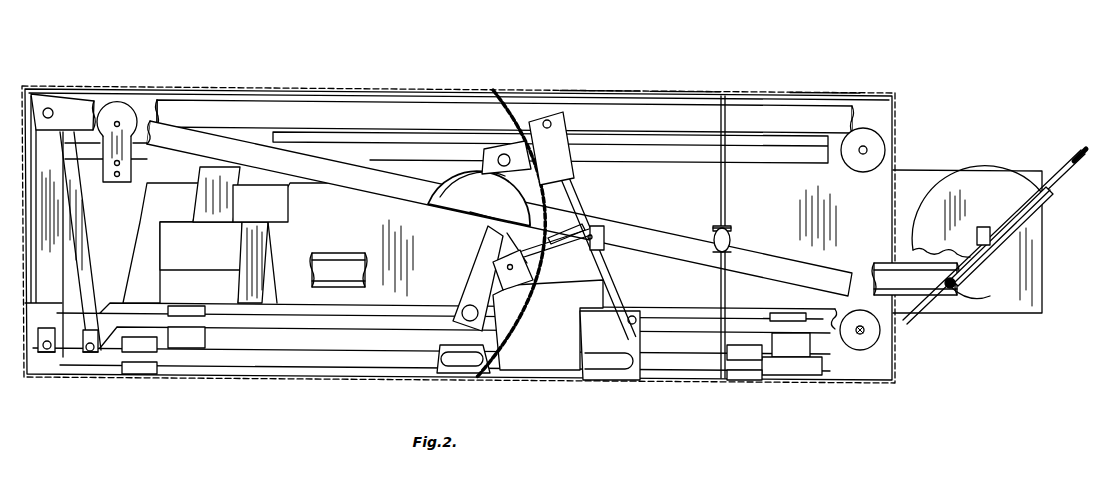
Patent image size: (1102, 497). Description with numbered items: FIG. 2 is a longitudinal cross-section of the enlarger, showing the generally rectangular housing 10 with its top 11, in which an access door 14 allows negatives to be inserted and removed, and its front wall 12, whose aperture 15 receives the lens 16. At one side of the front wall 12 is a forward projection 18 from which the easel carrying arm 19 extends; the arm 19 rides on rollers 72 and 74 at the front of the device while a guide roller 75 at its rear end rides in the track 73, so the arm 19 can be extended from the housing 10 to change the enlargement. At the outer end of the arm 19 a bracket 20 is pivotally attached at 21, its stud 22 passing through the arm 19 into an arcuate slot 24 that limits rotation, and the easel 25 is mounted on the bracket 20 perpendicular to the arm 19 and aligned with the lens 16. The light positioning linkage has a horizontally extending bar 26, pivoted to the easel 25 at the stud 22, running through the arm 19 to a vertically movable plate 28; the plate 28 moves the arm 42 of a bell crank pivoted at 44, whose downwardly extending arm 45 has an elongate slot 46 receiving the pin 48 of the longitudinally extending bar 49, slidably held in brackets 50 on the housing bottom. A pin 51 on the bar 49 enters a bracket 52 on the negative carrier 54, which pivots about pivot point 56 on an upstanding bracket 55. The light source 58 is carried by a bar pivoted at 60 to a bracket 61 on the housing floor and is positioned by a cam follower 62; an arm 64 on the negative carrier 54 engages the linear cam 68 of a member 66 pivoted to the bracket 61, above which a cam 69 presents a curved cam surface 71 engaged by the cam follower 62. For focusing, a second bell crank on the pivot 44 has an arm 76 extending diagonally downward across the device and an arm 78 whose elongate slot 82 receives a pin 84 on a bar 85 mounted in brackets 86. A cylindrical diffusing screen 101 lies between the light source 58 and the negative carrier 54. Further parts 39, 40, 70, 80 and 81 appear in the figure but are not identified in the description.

The housing 10 is at (54, 86).
The top 11 is at (692, 90).
The front wall 12 is at (727, 300).
The access door 14 is at (602, 90).
The aperture 15 is at (730, 228).
The lens 16 is at (733, 240).
The forward projection 18 is at (829, 95).
The easel carrying arm 19 is at (929, 170).
The bracket 20 is at (990, 170).
The pivot 21 is at (980, 235).
The stud 22 is at (960, 291).
The arcuate slot 24 is at (980, 291).
The easel 25 is at (1062, 170).
The horizontally extending bar 26 is at (366, 271).
The vertically movable plate 28 is at (207, 258).
The panel 39 is at (138, 232).
The panel 40 is at (283, 248).
The arm 42 is at (260, 120).
The pivot pin 44 is at (50, 108).
The arm 45 is at (86, 268).
The elongate slot 46 is at (89, 330).
The pin 48 is at (90, 353).
The longitudinally extending bar 49 is at (385, 314).
The brackets 50 is at (190, 307).
The pin 51 is at (640, 320).
The bracket 52 is at (485, 248).
The negative carrier 54 is at (582, 198).
The upstanding bracket 55 is at (607, 226).
The pivot point 56 is at (587, 244).
The light source 58 is at (463, 306).
The pivot 60 is at (547, 120).
The bracket 61 is at (570, 124).
The cam follower 62 is at (508, 169).
The cam follower carrying arm 64 is at (552, 292).
The member 66 is at (454, 232).
The linear cam 68 is at (540, 212).
The cam 69 is at (478, 214).
The pivot plate 70 is at (535, 262).
The curved cam surface 71 is at (438, 196).
The roller 72 is at (880, 140).
The track 73 is at (170, 113).
The roller 74 is at (852, 345).
The guide roller 75 is at (118, 104).
The arm 76 is at (336, 200).
The arm 78 is at (30, 256).
The spacer 80 is at (242, 192).
The plate 81 is at (284, 214).
The elongate slot 82 is at (46, 328).
The pin 84 is at (45, 353).
The bar 85 is at (216, 371).
The brackets 86 is at (127, 375).
The diffusing screen 101 is at (507, 342).